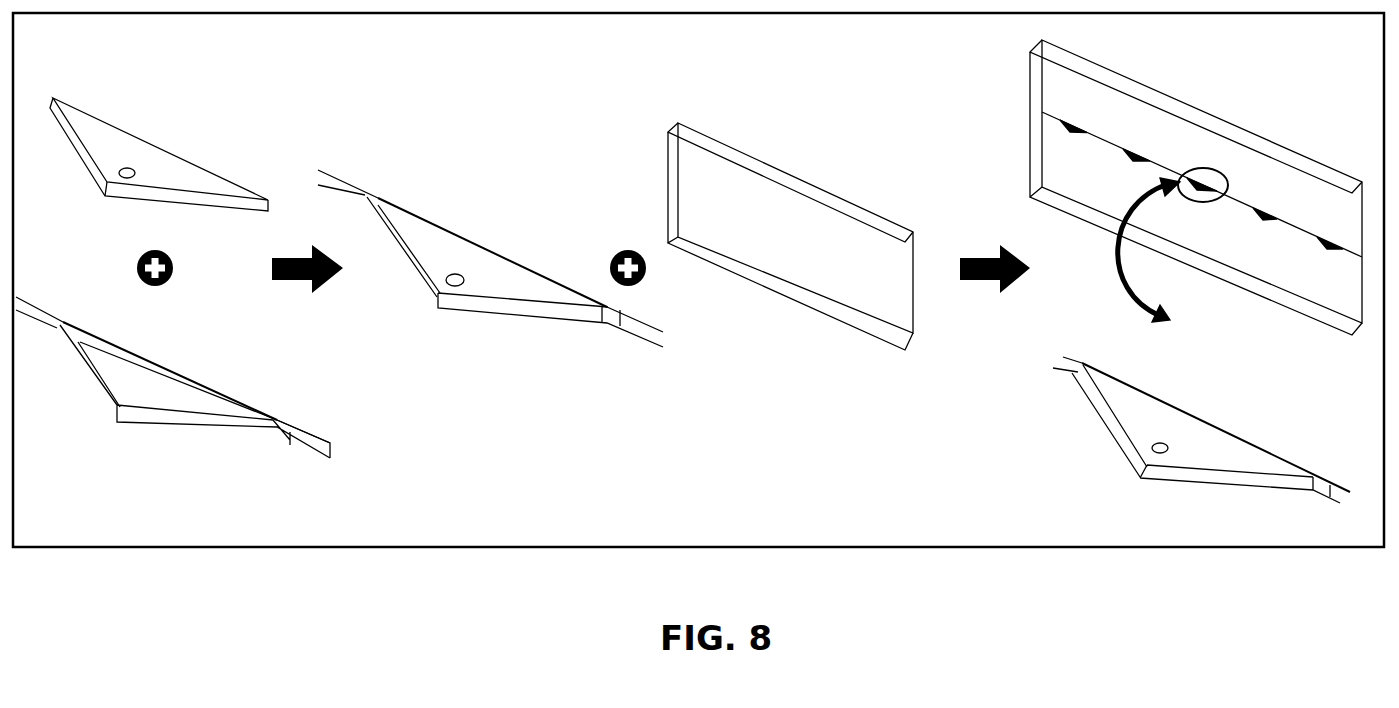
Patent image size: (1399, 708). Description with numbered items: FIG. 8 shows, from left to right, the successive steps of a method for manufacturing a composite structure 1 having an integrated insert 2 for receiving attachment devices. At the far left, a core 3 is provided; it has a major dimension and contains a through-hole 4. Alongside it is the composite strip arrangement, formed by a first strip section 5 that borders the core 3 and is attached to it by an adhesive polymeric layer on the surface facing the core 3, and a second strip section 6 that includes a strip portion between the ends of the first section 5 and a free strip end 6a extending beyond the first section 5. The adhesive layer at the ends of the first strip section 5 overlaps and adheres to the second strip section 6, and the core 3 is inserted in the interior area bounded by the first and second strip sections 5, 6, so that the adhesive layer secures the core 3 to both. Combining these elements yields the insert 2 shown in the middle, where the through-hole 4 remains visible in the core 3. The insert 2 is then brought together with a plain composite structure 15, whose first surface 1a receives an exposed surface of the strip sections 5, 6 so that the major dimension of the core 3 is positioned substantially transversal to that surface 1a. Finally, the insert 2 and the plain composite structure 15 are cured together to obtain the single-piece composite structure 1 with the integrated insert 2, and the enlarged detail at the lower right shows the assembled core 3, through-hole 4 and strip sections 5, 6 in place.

The composite structure 1 is at (1149, 74).
The first surface 1a is at (813, 263).
The insert 2 is at (451, 208).
The core 3 is at (109, 103).
The through-hole 4 is at (131, 163).
The first strip section 5 is at (174, 436).
The second strip section 6 is at (144, 345).
The free strip end 6a is at (333, 433).
The plain composite structure 15 is at (799, 150).